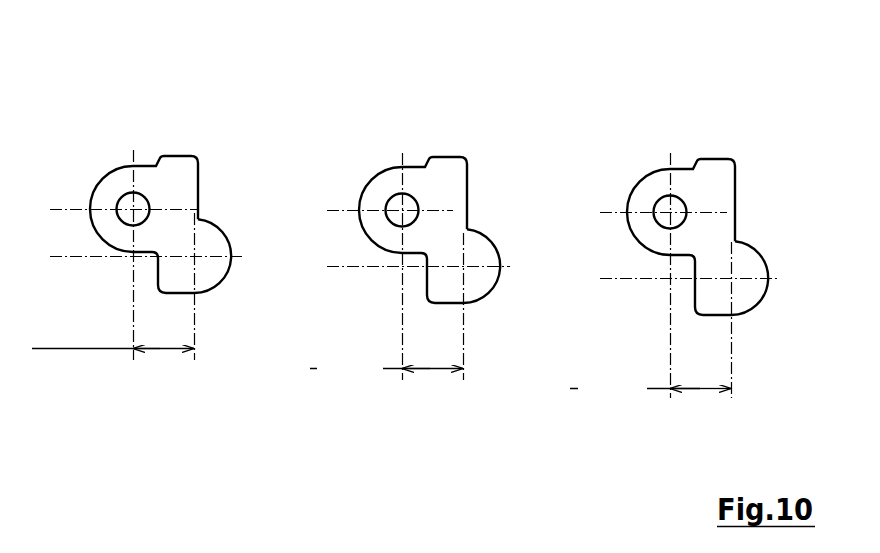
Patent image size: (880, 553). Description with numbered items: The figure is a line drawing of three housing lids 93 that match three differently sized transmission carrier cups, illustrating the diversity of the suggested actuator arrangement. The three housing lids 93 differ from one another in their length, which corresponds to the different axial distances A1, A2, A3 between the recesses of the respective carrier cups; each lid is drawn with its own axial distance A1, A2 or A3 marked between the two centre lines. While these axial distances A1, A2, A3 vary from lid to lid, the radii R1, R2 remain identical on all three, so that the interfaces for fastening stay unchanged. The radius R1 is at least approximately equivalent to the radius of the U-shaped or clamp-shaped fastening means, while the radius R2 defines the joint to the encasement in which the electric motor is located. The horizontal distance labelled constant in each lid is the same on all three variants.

The housing lid 93 is at (412, 220).
The radius R1 is at (133, 209).
The radius R2 is at (194, 256).
The axial distance A1 is at (58, 178).
The axial distance A2 is at (336, 180).
The axial distance A3 is at (610, 212).